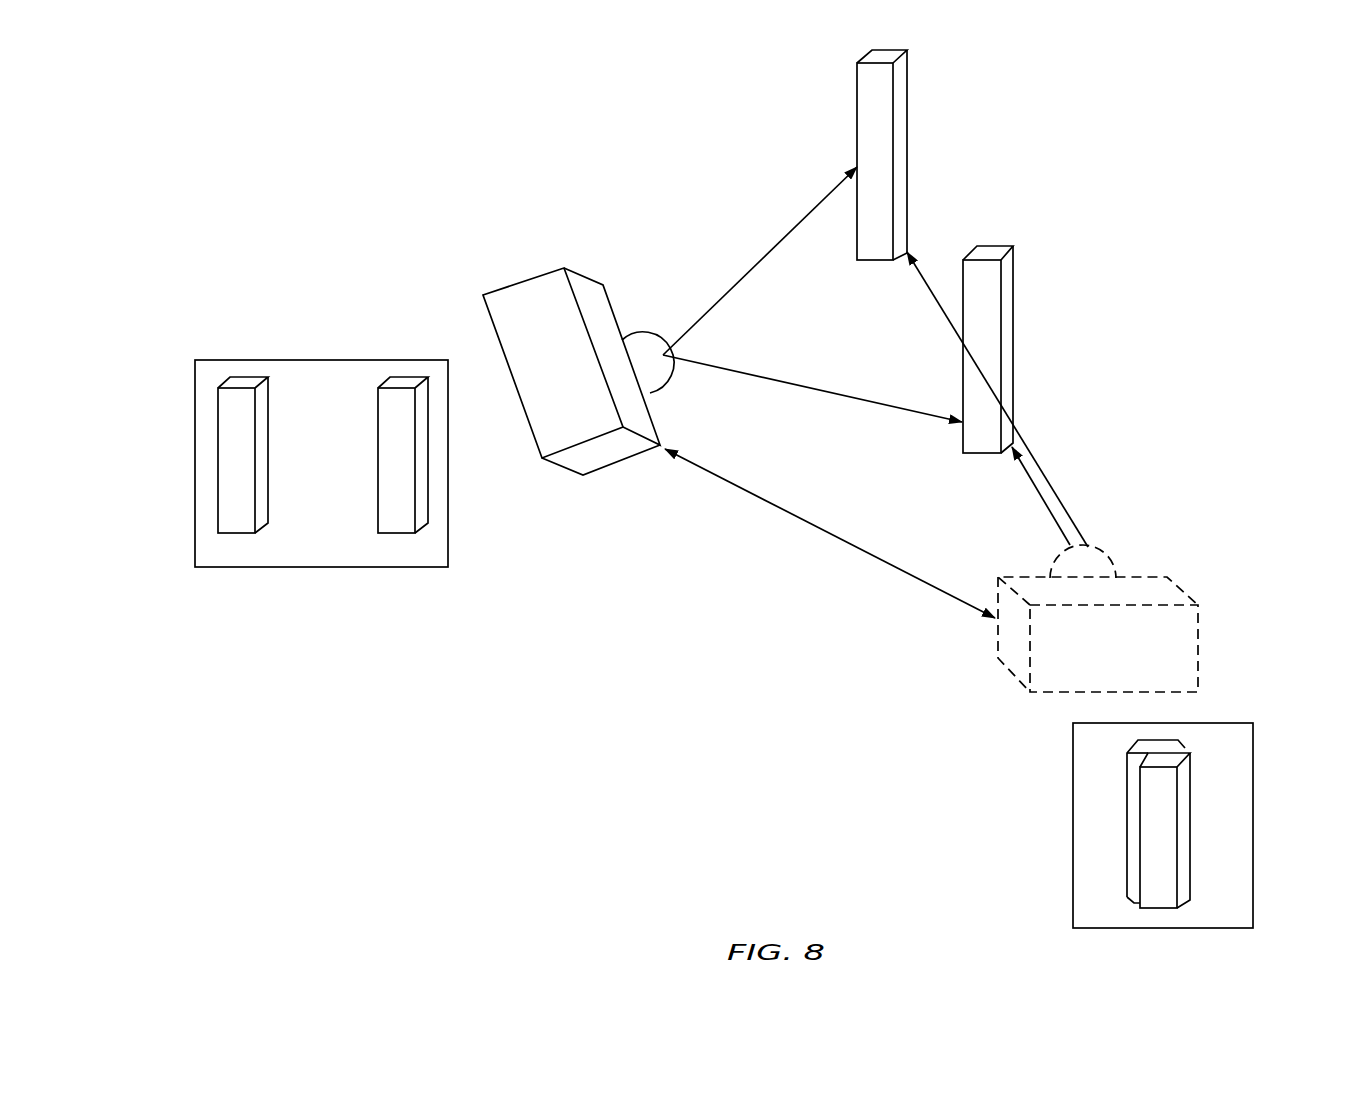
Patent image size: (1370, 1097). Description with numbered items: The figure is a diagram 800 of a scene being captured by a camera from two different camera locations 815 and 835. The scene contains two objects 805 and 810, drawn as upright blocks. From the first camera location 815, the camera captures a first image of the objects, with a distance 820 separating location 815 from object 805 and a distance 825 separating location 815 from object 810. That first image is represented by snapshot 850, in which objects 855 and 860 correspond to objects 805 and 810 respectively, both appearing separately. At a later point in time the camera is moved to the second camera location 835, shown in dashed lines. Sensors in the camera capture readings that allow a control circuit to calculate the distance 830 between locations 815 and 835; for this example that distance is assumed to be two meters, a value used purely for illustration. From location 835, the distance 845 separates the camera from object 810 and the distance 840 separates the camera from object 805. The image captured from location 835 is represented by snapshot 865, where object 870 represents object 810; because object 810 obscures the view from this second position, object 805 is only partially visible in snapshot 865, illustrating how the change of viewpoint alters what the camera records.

The diagram 800 is at (236, 102).
The object 805 is at (912, 127).
The object 810 is at (1017, 303).
The camera location 815 is at (537, 276).
The distance 820 is at (753, 272).
The distance 825 is at (840, 393).
The distance 830 is at (838, 533).
The camera location 835 is at (1200, 638).
The distance 840 is at (1062, 488).
The distance 845 is at (1040, 498).
The snapshot 850 is at (351, 434).
The object 855 is at (269, 422).
The object 860 is at (377, 478).
The snapshot 865 is at (1082, 825).
The object 870 is at (1192, 830).